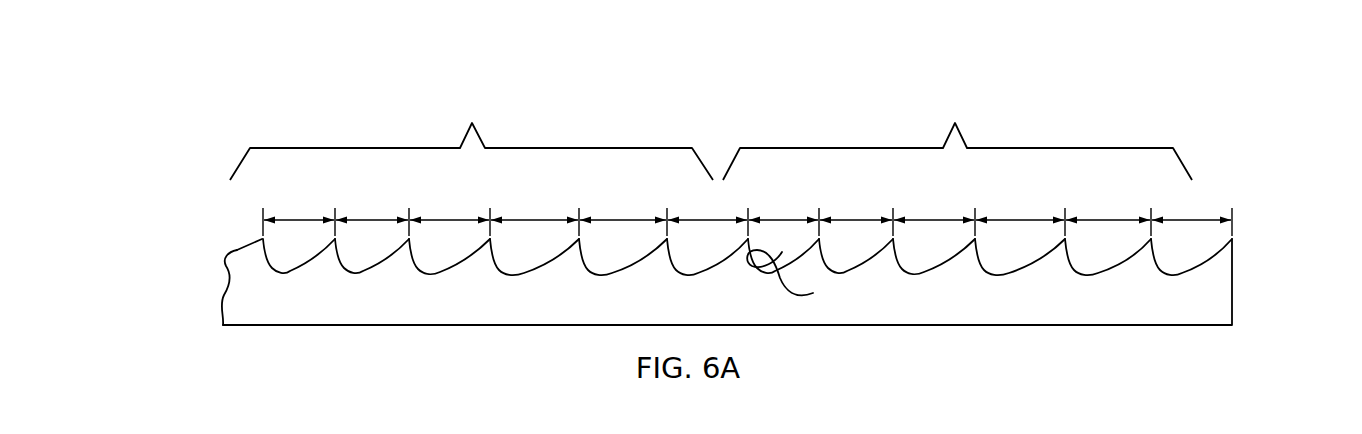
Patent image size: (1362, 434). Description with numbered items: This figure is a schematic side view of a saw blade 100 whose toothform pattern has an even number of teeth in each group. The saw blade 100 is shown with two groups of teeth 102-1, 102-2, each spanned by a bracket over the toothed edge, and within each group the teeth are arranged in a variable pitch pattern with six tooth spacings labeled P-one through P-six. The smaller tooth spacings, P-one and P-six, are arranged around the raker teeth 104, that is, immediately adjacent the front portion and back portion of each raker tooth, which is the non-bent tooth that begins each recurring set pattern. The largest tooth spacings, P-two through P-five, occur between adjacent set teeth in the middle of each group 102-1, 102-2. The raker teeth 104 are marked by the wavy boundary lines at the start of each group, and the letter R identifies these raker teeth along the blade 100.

The saw blade 100 is at (747, 204).
The first group of teeth 102-1 is at (471, 134).
The second group of teeth 102-2 is at (957, 134).
The raker teeth 104 is at (239, 250).